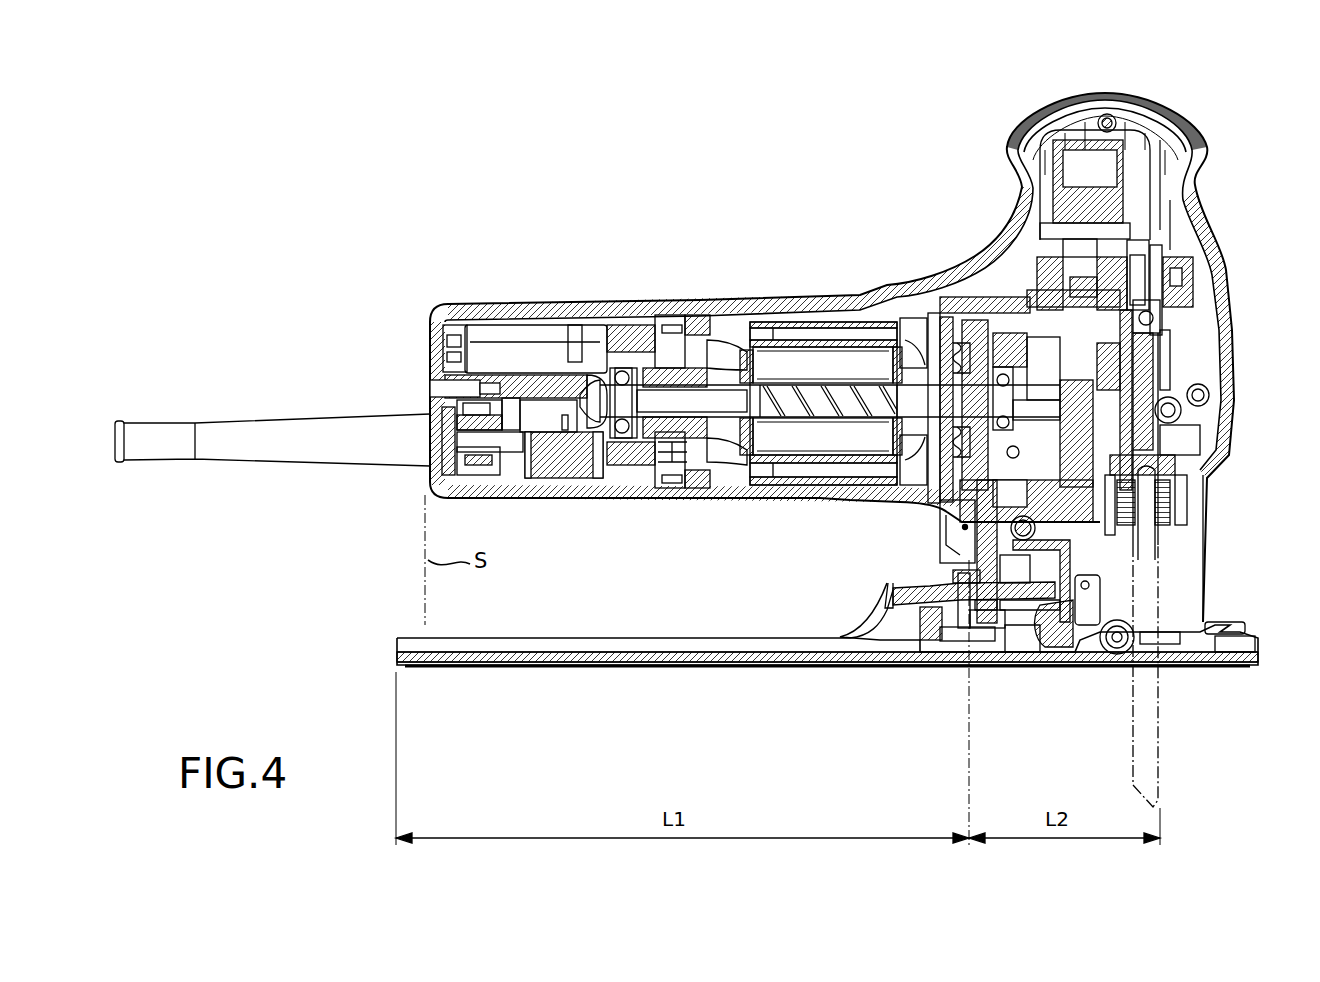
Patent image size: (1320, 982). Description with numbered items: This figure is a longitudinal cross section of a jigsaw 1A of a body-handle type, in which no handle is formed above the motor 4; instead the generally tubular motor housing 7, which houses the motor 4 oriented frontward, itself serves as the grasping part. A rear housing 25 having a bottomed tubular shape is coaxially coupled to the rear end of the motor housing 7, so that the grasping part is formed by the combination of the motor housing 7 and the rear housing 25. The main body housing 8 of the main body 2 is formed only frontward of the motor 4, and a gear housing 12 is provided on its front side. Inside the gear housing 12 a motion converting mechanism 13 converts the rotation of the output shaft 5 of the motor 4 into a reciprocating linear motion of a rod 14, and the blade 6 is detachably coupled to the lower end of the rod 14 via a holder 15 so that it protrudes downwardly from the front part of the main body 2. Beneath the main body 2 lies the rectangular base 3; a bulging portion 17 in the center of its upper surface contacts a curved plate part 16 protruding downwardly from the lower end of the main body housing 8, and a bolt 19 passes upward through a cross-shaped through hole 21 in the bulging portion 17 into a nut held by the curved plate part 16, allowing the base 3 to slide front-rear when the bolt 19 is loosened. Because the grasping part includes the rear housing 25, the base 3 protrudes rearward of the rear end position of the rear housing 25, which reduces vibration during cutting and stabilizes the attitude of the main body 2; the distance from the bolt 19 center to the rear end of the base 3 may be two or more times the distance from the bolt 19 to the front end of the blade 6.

The jigsaw 1A is at (934, 118).
The main body 2 is at (1206, 212).
The base 3 is at (715, 655).
The motor 4 is at (832, 362).
The output shaft 5 is at (921, 400).
The blade 6 is at (1160, 729).
The motor housing 7 is at (782, 306).
The main body housing 8 is at (1200, 134).
The gear housing 12 is at (1187, 277).
The motion converting mechanism 13 is at (1170, 318).
The rod 14 is at (1152, 383).
The holder (chuck) 15 is at (1165, 515).
The curved plate part 16 is at (912, 588).
The bulging portion 17 is at (1030, 612).
The bolt 19 is at (960, 635).
The through hole 21 is at (985, 607).
The rear housing 25 is at (582, 305).